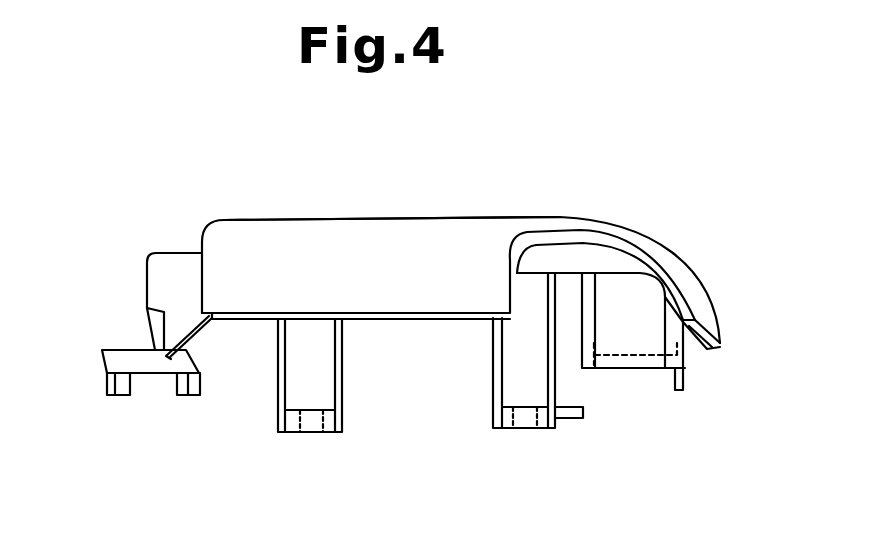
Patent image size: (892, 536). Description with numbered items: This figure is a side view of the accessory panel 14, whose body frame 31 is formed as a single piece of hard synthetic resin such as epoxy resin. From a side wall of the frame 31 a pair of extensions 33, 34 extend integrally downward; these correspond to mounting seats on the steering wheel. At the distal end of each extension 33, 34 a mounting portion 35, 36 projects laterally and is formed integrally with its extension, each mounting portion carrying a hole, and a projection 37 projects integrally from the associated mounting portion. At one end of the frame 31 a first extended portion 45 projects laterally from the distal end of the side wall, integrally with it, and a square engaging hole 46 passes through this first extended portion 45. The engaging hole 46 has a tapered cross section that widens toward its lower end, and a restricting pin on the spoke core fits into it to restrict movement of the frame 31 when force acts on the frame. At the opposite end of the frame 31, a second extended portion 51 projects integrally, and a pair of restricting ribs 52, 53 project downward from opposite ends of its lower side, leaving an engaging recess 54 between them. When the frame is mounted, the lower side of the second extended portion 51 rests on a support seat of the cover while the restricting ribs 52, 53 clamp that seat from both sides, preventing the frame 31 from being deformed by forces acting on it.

The accessory panel 14 is at (434, 217).
The body frame 31 is at (355, 215).
The extension 33 is at (492, 362).
The extension 34 is at (342, 388).
The mounting portion 35 is at (507, 430).
The mounting portion 36 is at (293, 433).
The projection 37 is at (570, 420).
The first extended portion 45 is at (655, 370).
The engaging hole 46 is at (602, 358).
The second extended portion 51 is at (150, 368).
The restricting rib 52 is at (190, 397).
The restricting rib 53 is at (120, 395).
The engaging recess 54 is at (139, 376).